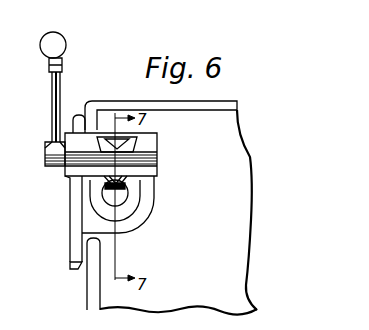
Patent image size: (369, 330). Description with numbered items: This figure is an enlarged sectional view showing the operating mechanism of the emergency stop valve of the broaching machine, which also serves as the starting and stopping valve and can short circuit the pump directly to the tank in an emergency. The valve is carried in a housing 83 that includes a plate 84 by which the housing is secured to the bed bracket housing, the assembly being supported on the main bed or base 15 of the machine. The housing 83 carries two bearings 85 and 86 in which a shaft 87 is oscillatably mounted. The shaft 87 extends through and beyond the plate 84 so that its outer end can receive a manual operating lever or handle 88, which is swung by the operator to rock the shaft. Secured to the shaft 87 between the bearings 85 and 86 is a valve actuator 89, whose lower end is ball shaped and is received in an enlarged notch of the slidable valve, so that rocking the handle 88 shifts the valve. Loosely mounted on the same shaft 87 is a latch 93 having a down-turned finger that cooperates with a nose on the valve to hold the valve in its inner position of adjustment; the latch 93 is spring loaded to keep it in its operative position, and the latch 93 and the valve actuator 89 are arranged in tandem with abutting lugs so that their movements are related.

The manual operating lever or handle 88 is at (62, 76).
The housing 83 is at (164, 119).
The shaft 87 is at (155, 158).
The bearing 86 is at (72, 190).
The valve actuator 89 is at (132, 187).
The bearing 85 is at (130, 178).
The latch 93 is at (135, 184).
The plate 84 is at (73, 256).
The main bed or base 15 is at (88, 296).